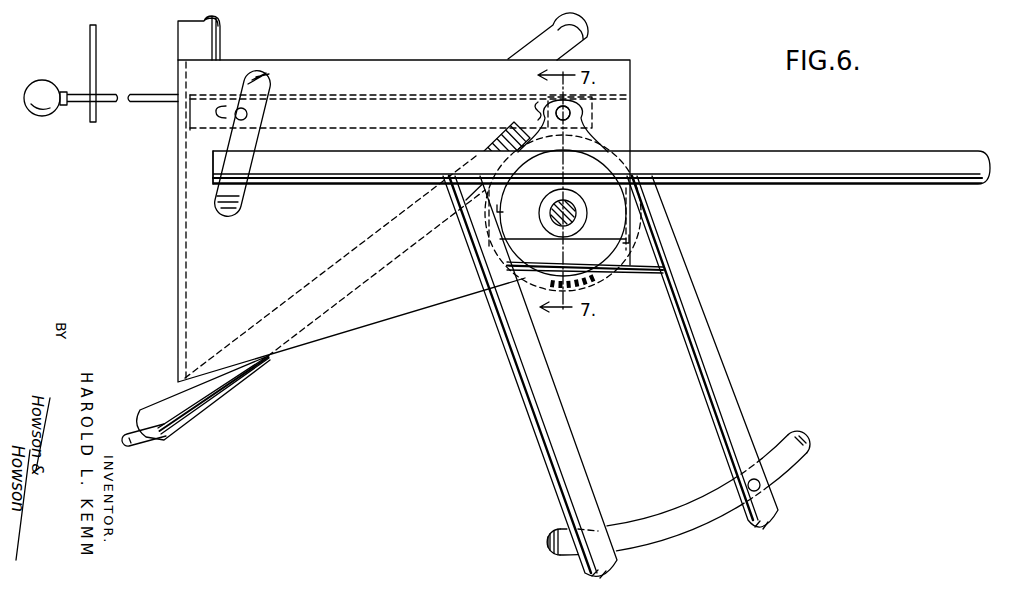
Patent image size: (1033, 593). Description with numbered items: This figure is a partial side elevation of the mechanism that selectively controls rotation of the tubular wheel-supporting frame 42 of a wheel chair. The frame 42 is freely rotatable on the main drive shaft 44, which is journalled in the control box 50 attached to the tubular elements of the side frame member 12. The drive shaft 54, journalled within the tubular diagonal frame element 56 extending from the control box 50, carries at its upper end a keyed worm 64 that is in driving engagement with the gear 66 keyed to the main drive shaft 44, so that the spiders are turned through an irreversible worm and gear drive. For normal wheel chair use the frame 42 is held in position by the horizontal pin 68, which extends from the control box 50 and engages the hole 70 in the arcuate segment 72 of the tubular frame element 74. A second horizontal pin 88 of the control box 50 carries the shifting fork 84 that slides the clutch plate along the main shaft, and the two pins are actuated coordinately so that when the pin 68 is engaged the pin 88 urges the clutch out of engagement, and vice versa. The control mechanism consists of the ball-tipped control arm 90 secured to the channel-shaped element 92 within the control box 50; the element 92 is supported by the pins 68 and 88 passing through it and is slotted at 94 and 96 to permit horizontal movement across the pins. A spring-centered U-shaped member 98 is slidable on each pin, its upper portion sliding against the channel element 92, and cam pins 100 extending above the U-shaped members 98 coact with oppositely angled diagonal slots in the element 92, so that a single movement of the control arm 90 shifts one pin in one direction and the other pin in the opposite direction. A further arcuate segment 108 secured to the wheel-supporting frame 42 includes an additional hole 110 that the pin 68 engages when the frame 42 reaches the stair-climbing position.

The tubular side frame member 12 is at (186, 32).
The tubular wheel-supporting frame 42 is at (861, 147).
The main drive shaft 44 is at (587, 217).
The control box 50 is at (246, 259).
The drive shaft 54 is at (143, 441).
The tubular diagonal frame element 56 is at (247, 378).
The keyed worm 64 is at (503, 124).
The gear 66 is at (587, 286).
The horizontal pin 68 is at (240, 118).
The hole 70 is at (258, 128).
The arcuate segment 72 is at (278, 84).
The tubular frame element 74 is at (356, 167).
The shifting fork 84 is at (590, 141).
The horizontal pin 88 is at (572, 113).
The ball-tipped control arm 90 is at (132, 95).
The channel-shaped element 92 is at (426, 97).
The slot 94 is at (216, 115).
The slot 96 is at (537, 102).
The U-shaped member 98 is at (256, 114).
The cam pin 100 is at (248, 90).
The arcuate segment 108 is at (716, 491).
The hole 110 is at (761, 492).